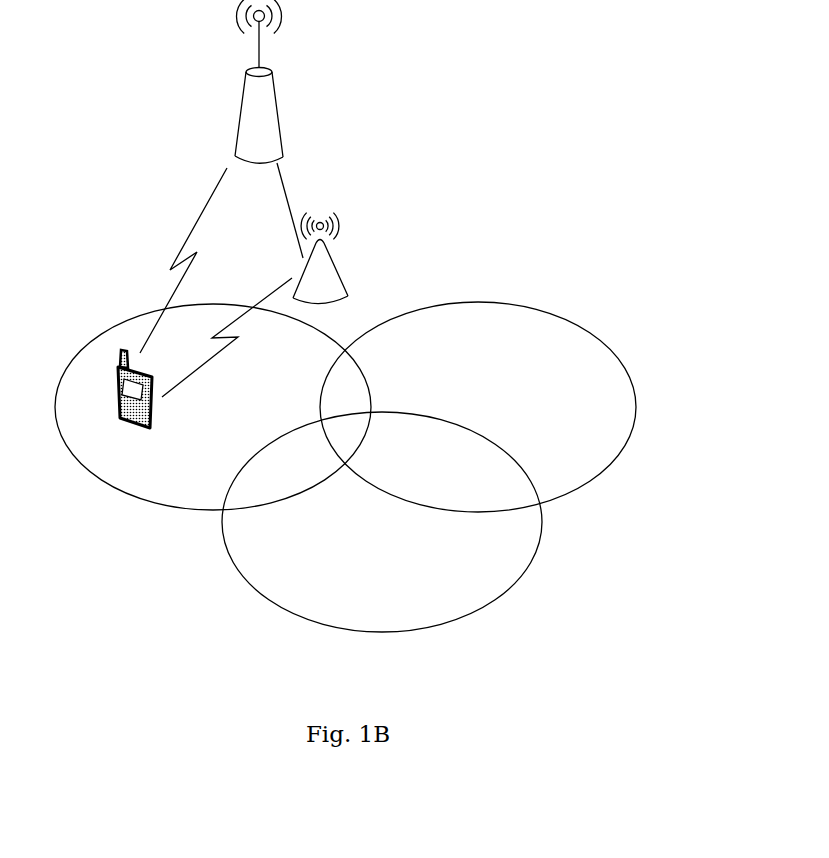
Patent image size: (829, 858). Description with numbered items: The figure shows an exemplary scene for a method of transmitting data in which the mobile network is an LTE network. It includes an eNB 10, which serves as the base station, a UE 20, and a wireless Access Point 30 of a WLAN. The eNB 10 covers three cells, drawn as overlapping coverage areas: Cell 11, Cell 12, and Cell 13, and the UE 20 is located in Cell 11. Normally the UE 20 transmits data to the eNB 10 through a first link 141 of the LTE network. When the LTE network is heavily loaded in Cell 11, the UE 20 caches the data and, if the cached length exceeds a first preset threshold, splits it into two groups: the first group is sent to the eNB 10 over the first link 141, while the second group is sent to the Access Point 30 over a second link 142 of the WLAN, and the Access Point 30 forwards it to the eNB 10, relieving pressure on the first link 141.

The eNB 10 is at (280, 117).
The wireless Access Point 30 is at (333, 265).
The UE 20 is at (115, 385).
The Cell 11 is at (117, 488).
The Cell 12 is at (627, 365).
The Cell 13 is at (520, 577).
The first link 141 is at (190, 230).
The second link 142 is at (196, 373).